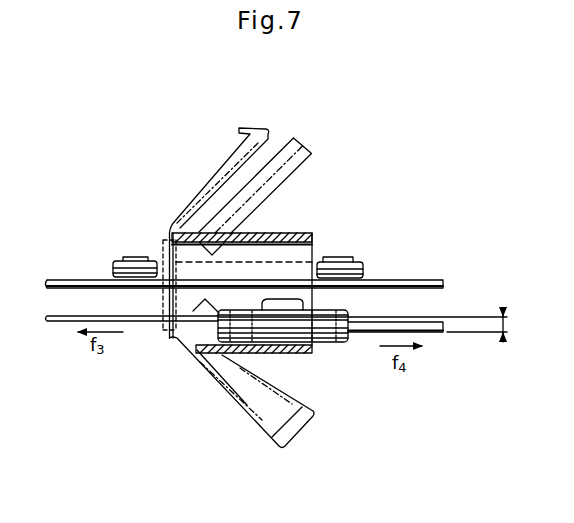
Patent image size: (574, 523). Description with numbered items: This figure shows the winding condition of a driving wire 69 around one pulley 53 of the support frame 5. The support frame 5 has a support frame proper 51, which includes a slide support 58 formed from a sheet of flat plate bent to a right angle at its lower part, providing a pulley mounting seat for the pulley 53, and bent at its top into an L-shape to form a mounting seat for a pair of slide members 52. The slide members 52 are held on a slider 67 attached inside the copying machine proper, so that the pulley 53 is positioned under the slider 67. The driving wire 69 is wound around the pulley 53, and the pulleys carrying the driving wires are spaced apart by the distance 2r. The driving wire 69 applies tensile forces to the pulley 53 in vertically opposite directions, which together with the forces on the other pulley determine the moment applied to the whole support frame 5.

The support frame 5 is at (313, 146).
The support frame proper 51 is at (251, 125).
The slide members 52 is at (138, 256).
The pulley 53 is at (330, 348).
The slide support 58 is at (291, 232).
The slider 67 is at (417, 279).
The driving wire 69 is at (438, 337).
The pulley spacing 2r is at (515, 340).